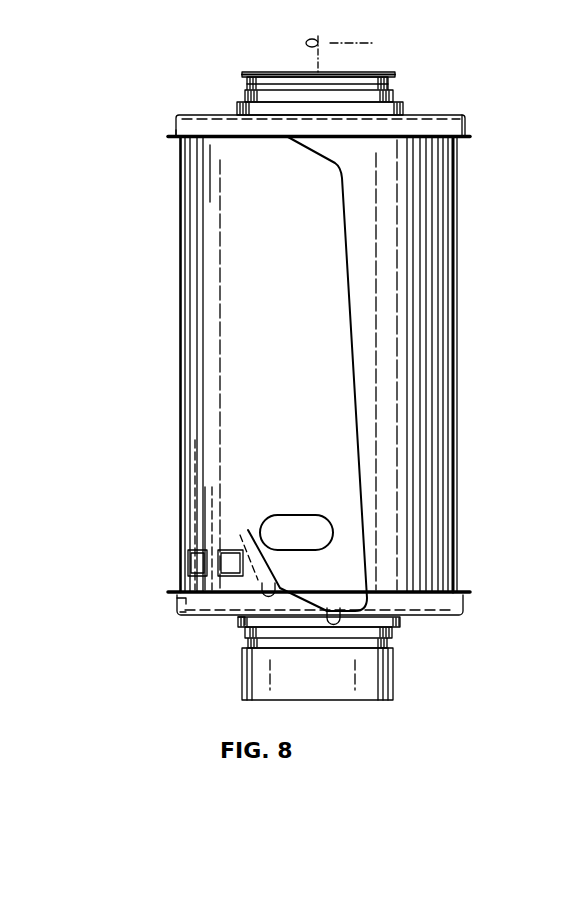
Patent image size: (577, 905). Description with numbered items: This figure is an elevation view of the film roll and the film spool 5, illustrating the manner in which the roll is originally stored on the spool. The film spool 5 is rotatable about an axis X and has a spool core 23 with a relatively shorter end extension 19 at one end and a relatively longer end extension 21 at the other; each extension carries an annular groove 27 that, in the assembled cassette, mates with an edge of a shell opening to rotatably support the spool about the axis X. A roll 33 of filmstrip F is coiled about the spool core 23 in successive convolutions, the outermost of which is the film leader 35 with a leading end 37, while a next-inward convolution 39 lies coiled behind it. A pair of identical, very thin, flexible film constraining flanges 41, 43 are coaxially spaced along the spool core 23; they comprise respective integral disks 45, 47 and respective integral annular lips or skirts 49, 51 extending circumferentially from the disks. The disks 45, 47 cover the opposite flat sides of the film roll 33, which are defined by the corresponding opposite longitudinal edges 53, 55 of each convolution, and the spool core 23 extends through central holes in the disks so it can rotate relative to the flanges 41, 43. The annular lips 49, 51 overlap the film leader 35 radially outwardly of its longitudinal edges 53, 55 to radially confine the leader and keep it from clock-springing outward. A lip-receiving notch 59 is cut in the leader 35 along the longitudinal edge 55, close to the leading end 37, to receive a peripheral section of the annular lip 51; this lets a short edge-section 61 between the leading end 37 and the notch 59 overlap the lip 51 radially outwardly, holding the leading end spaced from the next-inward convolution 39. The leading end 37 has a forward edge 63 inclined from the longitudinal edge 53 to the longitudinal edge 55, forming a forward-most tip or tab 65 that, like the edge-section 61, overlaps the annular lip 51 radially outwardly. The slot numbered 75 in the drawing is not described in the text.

The film spool 5 is at (170, 417).
The shorter end extension 19 is at (408, 72).
The longer end extension 21 is at (243, 687).
The spool core 23 is at (238, 73).
The annular groove 27 is at (247, 82).
The film roll 33 is at (182, 367).
The film leader 35 is at (180, 327).
The leading end 37 is at (317, 393).
The next-inward convolution 39 is at (400, 298).
The upper film constraining flange 41 is at (172, 123).
The lower film constraining flange 43 is at (175, 610).
The disk 45 is at (445, 112).
The disk 47 is at (187, 618).
The annular lip 49 is at (172, 136).
The annular lip 51 is at (175, 598).
The longitudinal edge 53 is at (200, 116).
The longitudinal edge 55 is at (202, 610).
The lip-receiving notch 59 is at (223, 546).
The edge-section 61 is at (330, 616).
The forward edge 63 is at (350, 330).
The tab 65 is at (347, 597).
The slot 75 is at (298, 527).
The filmstrip F is at (212, 255).
The axis X is at (351, 51).